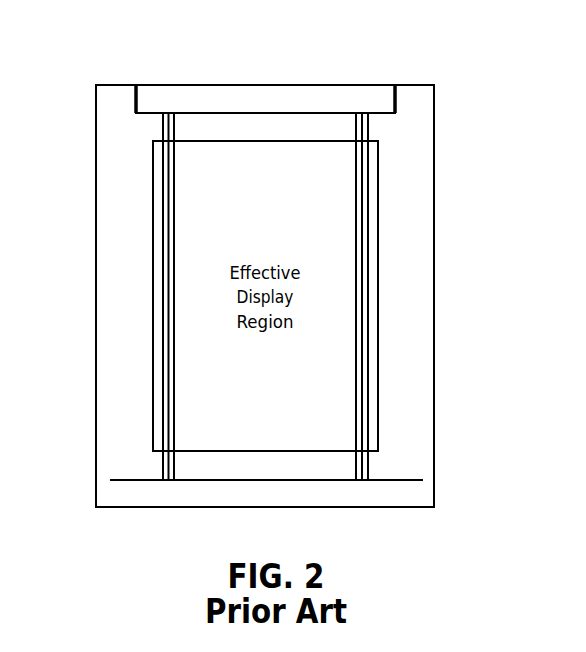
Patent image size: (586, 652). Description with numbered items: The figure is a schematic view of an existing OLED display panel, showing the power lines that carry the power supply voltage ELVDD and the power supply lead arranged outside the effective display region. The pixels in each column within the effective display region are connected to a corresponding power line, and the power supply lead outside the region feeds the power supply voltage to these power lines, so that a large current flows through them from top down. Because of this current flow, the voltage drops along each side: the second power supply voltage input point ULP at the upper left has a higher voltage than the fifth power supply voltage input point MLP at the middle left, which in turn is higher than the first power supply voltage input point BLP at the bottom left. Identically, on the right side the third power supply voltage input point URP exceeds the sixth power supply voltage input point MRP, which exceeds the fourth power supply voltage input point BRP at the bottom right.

The second power supply voltage input point ULP is at (156, 120).
The fifth power supply voltage input point MLP is at (147, 298).
The first power supply voltage input point BLP is at (159, 473).
The third power supply voltage input point URP is at (373, 120).
The sixth power supply voltage input point MRP is at (381, 300).
The fourth power supply voltage input point BRP is at (372, 472).